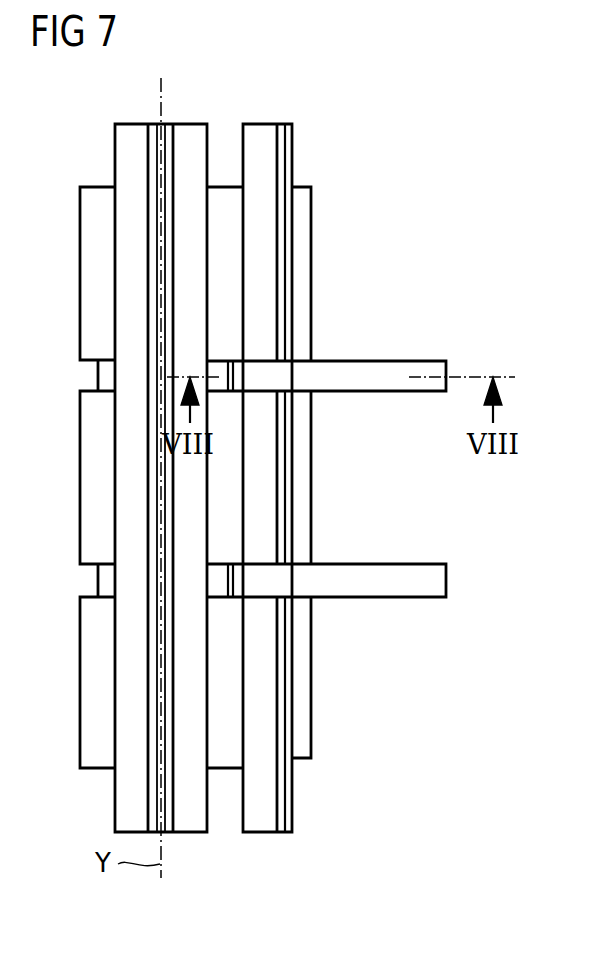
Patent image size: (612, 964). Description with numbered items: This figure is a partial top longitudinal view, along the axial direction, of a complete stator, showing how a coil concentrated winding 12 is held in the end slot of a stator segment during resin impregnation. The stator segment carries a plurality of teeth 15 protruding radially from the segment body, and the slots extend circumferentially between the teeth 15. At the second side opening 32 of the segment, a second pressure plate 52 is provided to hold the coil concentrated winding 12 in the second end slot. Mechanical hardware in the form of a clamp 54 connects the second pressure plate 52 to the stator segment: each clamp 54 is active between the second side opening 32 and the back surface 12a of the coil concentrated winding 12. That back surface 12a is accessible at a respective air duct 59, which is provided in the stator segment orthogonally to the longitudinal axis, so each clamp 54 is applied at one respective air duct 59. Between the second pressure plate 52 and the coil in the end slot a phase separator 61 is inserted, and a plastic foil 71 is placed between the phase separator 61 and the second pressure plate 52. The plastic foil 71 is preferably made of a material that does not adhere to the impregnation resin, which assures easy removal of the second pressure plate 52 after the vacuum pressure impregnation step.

The coil concentrated winding 12 is at (135, 133).
The back surface of the coil concentrated winding 12a is at (232, 264).
The teeth 15 is at (92, 278).
The second side opening 32 is at (290, 308).
The second pressure plate 52 is at (302, 212).
The clamp 54 is at (390, 368).
The air duct 59 is at (105, 375).
The phase separator 61 is at (162, 178).
The plastic foil 71 is at (289, 149).